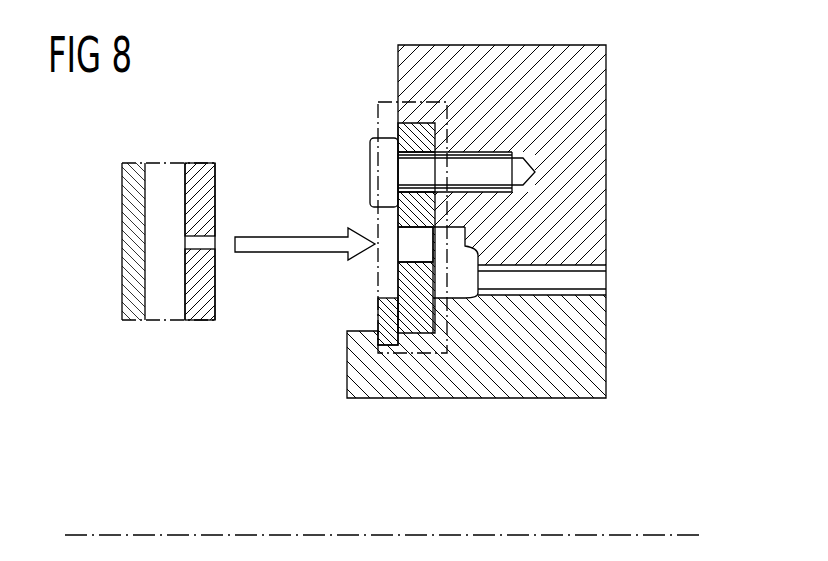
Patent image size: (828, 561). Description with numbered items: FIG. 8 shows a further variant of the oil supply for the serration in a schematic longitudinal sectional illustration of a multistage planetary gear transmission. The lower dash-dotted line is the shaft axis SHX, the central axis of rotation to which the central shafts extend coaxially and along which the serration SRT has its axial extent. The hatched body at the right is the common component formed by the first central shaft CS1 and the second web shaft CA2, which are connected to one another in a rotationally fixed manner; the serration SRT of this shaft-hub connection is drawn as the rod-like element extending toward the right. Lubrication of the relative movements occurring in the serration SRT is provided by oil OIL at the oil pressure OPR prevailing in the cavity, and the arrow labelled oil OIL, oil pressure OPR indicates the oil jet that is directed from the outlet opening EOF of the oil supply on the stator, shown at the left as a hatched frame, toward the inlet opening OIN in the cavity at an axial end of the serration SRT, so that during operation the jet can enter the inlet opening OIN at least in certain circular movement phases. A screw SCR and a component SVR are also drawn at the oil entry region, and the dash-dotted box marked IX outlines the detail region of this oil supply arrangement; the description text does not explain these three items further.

The screw SCR is at (390, 148).
The oil OIL is at (275, 243).
The oil pressure OPR is at (301, 192).
The inlet opening OIN is at (413, 239).
The outlet opening EOF is at (185, 238).
The detail view IX is at (378, 276).
The serration SRT is at (595, 279).
The sleeve / valve ring SVR is at (395, 335).
The first central shaft CS1 is at (476, 259).
The second web shaft CA2 is at (476, 259).
The shaft axis SHX is at (115, 535).